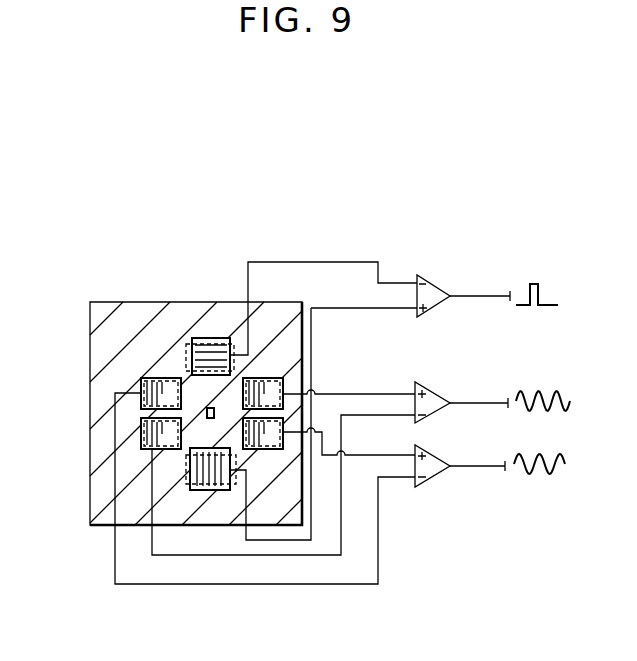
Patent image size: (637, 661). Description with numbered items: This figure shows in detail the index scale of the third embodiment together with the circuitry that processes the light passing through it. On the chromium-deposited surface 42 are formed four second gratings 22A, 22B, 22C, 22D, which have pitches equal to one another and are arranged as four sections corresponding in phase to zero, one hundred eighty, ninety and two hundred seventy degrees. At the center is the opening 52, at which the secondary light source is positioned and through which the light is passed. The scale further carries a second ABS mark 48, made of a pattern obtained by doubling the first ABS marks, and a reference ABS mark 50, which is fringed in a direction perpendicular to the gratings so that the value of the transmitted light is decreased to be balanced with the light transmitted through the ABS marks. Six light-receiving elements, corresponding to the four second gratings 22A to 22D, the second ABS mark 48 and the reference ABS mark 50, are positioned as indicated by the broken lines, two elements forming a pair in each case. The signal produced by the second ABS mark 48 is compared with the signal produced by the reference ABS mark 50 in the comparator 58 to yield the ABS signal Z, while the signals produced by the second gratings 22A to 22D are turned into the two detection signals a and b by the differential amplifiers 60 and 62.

The second grating 22A is at (270, 378).
The second grating 22B is at (141, 437).
The second grating 22C is at (282, 420).
The second grating 22D is at (155, 378).
The chromium-deposited surface 42 is at (232, 310).
The second ABS mark 48 is at (205, 490).
The reference ABS mark 50 is at (200, 338).
The central opening 52 is at (214, 418).
The comparator 58 is at (425, 270).
The differential amplifier 60 is at (423, 382).
The differential amplifier 62 is at (428, 488).